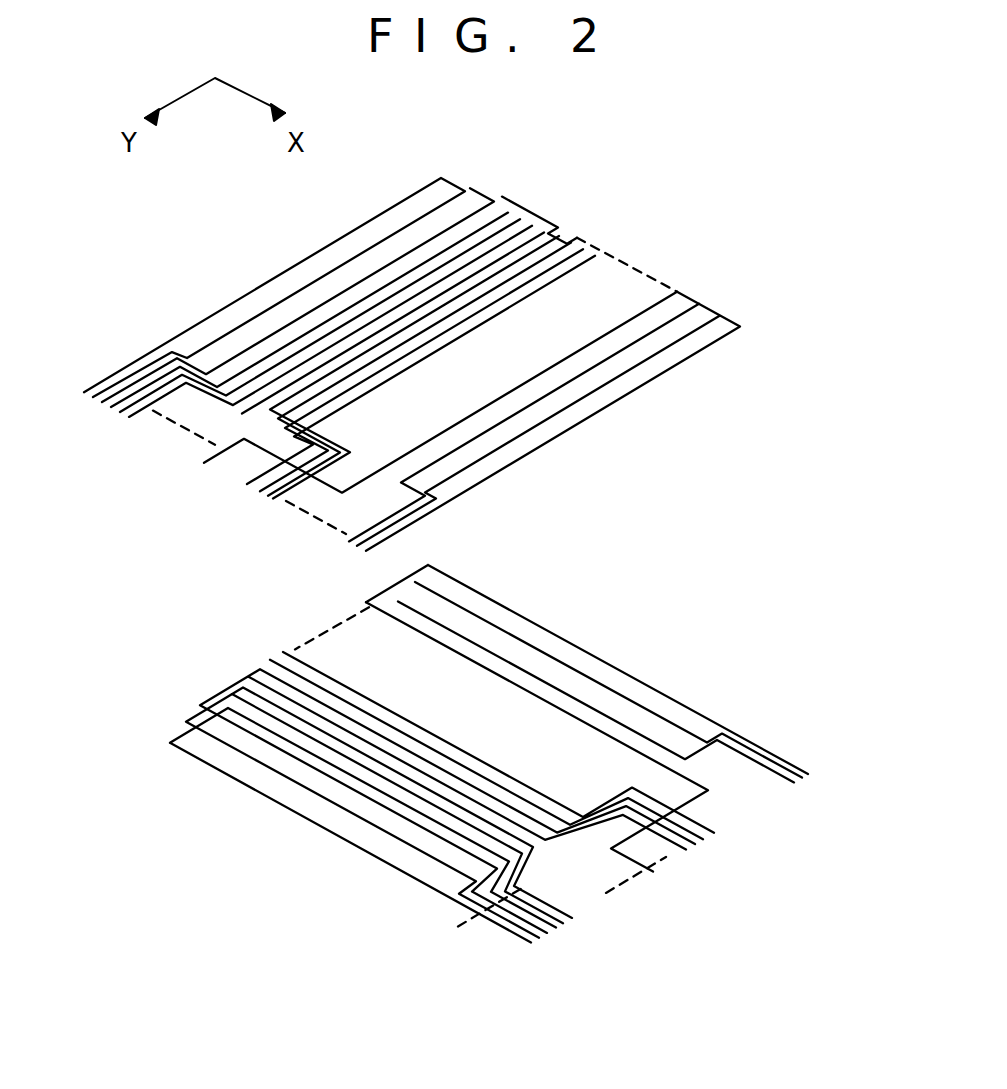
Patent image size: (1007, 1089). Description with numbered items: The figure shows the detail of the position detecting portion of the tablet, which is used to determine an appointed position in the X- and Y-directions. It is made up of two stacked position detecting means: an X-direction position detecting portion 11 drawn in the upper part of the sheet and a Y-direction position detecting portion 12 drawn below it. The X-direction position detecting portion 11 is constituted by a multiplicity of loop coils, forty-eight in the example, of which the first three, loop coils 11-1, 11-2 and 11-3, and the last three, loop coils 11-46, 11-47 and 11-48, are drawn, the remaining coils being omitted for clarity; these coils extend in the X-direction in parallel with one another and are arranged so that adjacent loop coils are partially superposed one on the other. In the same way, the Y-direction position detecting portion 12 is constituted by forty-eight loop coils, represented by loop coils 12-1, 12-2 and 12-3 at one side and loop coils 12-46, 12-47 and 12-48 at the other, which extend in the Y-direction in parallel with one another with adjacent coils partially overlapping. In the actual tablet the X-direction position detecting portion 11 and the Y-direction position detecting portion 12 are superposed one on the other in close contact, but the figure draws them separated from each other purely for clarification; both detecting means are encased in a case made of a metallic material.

The X-direction position detecting portion 11 is at (682, 232).
The loop coil 11-1 is at (430, 184).
The loop coil 11-2 is at (482, 187).
The loop coil 11-3 is at (538, 204).
The loop coil 11-46 is at (596, 358).
The loop coil 11-47 is at (660, 348).
The loop coil 11-48 is at (722, 338).
The Y-direction position detecting portion 12 is at (300, 862).
The loop coil 12-1 is at (214, 768).
The loop coil 12-2 is at (190, 715).
The loop coil 12-3 is at (240, 680).
The loop coil 12-46 is at (590, 704).
The loop coil 12-47 is at (558, 653).
The loop coil 12-48 is at (520, 607).